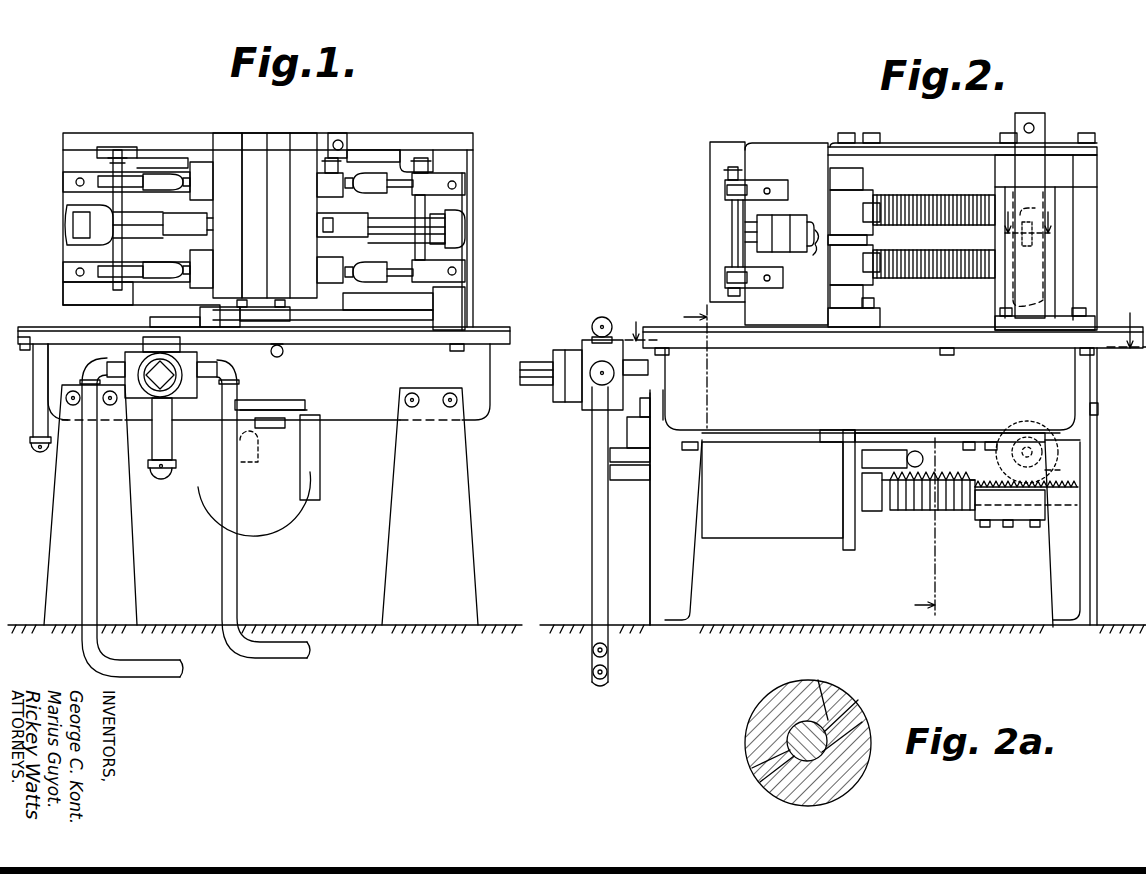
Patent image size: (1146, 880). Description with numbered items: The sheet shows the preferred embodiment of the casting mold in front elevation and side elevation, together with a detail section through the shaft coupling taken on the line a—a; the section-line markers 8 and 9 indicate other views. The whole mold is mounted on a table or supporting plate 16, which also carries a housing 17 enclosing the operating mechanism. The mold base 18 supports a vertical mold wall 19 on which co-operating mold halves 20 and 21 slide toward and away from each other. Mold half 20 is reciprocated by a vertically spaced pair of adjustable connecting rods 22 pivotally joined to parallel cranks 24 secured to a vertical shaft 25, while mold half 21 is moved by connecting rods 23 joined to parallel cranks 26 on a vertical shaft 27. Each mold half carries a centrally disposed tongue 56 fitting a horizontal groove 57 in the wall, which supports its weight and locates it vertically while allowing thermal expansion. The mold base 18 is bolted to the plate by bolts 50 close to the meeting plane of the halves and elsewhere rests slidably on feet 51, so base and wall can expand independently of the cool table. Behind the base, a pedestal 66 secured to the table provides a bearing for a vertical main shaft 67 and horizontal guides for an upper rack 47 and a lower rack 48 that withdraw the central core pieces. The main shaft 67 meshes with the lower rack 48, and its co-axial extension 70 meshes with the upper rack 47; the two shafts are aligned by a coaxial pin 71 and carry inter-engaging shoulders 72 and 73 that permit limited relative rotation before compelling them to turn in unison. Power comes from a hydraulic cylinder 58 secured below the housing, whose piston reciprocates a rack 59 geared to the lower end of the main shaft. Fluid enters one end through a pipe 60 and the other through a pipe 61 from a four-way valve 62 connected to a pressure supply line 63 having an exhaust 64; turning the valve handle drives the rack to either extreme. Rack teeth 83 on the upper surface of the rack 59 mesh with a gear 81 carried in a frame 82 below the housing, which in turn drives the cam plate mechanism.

In FIG. 2, the section line 8- 8 is at (885, 323).
In FIG. 2, the section line 9- 9 is at (800, 460).
In FIG. 1, the supporting plate 16 is at (493, 332).
In FIG. 2, the supporting plate 16 is at (944, 335).
In FIG. 1, the housing 17 is at (366, 415).
In FIG. 2, the housing 17 is at (786, 418).
In FIG. 1, the mold base 18 is at (462, 302).
In FIG. 2, the mold base 18 is at (862, 320).
In FIG. 1, the vertical mold wall 19 is at (383, 146).
In FIG. 1, the mold half 20 is at (225, 160).
In FIG. 1, the mold half 21 is at (303, 170).
In FIG. 2, the mold half 21 is at (712, 151).
In FIG. 1, the connecting rods 22 is at (146, 250).
In FIG. 1, the connecting rods 23 is at (372, 268).
In FIG. 2, the connecting rods 23 is at (726, 193).
In FIG. 1, the cranks 24 is at (66, 184).
In FIG. 1, the vertical shaft 25 is at (72, 220).
In FIG. 1, the cranks 26 is at (465, 170).
In FIG. 2, the cranks 26 is at (726, 182).
In FIG. 1, the vertical shaft 27 is at (467, 214).
In FIG. 2, the vertical shaft 27 is at (765, 234).
In FIG. 2, the upper rack 47 is at (960, 200).
In FIG. 2, the lower rack 48 is at (962, 280).
In FIG. 1, the bolts 50 is at (282, 325).
In FIG. 2, the bolts 50 is at (866, 303).
In FIG. 1, the feet 51 is at (450, 325).
In FIG. 2, the feet 51 is at (762, 325).
In FIG. 2, the tongue 56 is at (815, 250).
In FIG. 1, the groove 57 is at (152, 228).
In FIG. 1, the hydraulic cylinder 58 is at (285, 522).
In FIG. 2, the hydraulic cylinder 58 is at (776, 530).
In FIG. 2, the rack 59 is at (922, 500).
In FIG. 1, the pipe 60 is at (185, 478).
In FIG. 2, the pipe 60 is at (638, 478).
In FIG. 1, the pipe 61 is at (36, 442).
In FIG. 2, the pipe 61 is at (625, 445).
In FIG. 1, the four-way valve 62 is at (196, 378).
In FIG. 2, the four-way valve 62 is at (562, 348).
In FIG. 1, the pressure supply line 63 is at (86, 583).
In FIG. 2, the pressure supply line 63 is at (592, 660).
In FIG. 1, the exhaust 64 is at (238, 603).
In FIG. 2, the exhaust 64 is at (592, 565).
In FIG. 2, the pedestal 66 is at (1098, 246).
In FIG. 2, the main shaft 67 is at (1040, 280).
In FIG. 2A, the main shaft 67 is at (850, 785).
In FIG. 2, the extension shaft 70 is at (1040, 150).
In FIG. 2A, the extension shaft 70 is at (762, 695).
In FIG. 2, the pin 71 is at (1045, 212).
In FIG. 2A, the pin 71 is at (805, 723).
In FIG. 2A, the shoulder 72 is at (845, 700).
In FIG. 2A, the shoulder 73 is at (868, 720).
In FIG. 2, the gear 81 is at (1060, 473).
In FIG. 2, the frame 82 is at (990, 500).
In FIG. 2, the rack teeth 83 is at (952, 483).